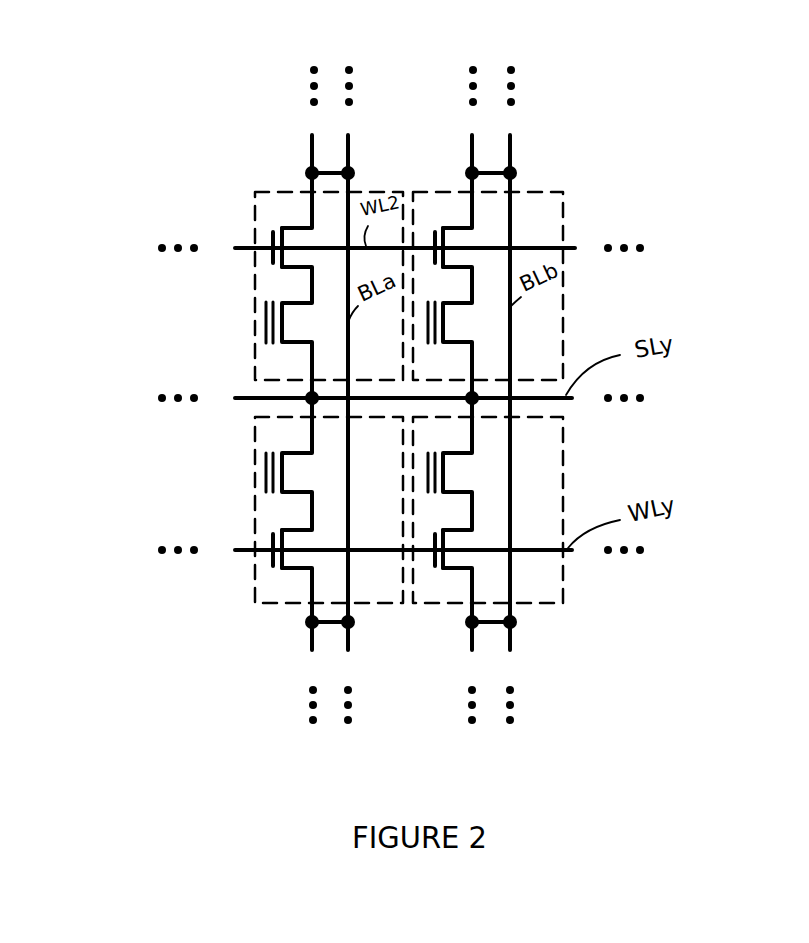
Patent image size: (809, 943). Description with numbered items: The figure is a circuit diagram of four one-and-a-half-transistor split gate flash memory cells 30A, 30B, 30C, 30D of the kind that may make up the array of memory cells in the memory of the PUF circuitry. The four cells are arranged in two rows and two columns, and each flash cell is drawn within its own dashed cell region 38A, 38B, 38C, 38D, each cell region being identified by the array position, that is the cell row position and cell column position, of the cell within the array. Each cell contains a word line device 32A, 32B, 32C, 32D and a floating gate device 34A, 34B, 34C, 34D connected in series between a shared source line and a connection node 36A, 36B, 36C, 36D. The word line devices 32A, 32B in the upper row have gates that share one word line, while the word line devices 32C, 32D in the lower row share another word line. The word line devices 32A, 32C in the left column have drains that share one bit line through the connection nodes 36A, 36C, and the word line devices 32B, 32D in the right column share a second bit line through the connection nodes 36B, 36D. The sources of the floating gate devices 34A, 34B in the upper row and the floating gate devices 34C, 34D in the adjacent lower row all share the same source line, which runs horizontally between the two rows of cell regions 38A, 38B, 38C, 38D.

The flash memory cell 30A is at (243, 177).
The flash memory cell 30B is at (567, 172).
The flash memory cell 30C is at (248, 627).
The flash memory cell 30D is at (578, 605).
The word line device 32A is at (275, 267).
The word line device 32B is at (442, 228).
The word line device 32C is at (255, 570).
The word line device 32D is at (437, 571).
The floating gate device 34A is at (268, 332).
The floating gate device 34B is at (448, 341).
The floating gate device 34C is at (270, 471).
The floating gate device 34D is at (460, 458).
The connection node 36A is at (310, 172).
The connection node 36B is at (470, 170).
The connection node 36C is at (310, 626).
The connection node 36D is at (474, 626).
The cell region 38A is at (252, 205).
The cell region 38B is at (565, 217).
The cell region 38C is at (250, 432).
The cell region 38D is at (566, 440).